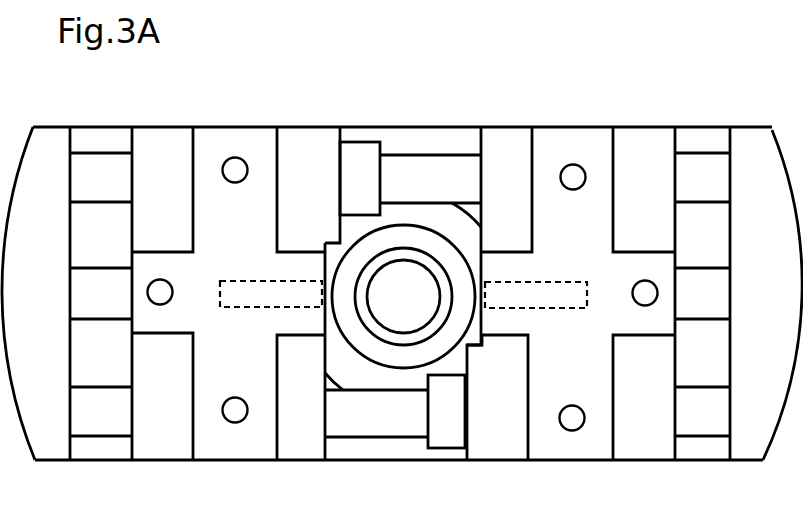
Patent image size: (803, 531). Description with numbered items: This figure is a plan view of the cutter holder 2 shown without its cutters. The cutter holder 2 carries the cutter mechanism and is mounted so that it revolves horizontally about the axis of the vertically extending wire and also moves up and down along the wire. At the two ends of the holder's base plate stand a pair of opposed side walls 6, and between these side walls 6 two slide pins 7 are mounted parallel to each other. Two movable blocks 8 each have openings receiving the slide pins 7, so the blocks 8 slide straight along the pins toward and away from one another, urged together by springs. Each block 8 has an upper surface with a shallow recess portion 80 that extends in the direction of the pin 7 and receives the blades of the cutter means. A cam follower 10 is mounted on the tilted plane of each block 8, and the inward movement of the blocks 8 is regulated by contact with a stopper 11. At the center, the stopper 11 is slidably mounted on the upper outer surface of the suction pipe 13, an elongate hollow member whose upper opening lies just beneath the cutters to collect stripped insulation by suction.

The cutter holder 2 is at (567, 107).
The side wall 6 is at (52, 143).
The slide pin 7 is at (417, 173).
The movable block 8 is at (312, 145).
The cam follower 10 is at (245, 290).
The stopper 11 is at (445, 217).
The suction pipe 13 is at (408, 260).
The recess portion 80 is at (192, 305).